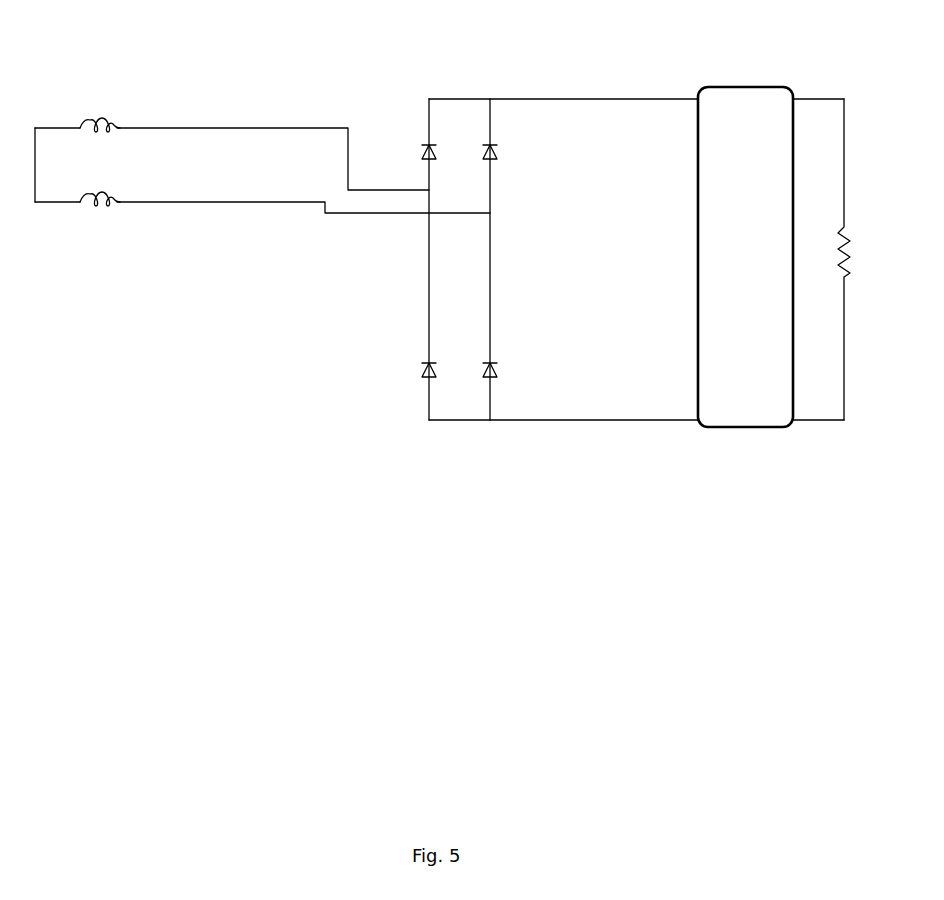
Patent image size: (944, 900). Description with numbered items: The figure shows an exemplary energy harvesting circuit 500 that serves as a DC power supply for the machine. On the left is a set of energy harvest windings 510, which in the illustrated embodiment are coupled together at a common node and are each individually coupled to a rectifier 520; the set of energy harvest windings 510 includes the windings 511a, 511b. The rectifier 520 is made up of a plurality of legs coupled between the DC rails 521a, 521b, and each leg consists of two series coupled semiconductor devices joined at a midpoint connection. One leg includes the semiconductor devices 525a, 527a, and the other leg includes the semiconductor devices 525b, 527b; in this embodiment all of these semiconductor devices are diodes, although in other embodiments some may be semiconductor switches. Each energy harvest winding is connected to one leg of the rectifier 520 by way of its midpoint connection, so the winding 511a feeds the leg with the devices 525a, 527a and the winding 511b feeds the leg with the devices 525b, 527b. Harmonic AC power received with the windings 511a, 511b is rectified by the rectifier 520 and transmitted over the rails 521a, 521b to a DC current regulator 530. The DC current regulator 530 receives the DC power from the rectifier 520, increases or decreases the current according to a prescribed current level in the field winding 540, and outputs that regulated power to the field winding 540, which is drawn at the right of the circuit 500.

The energy harvesting circuit 500 is at (450, 456).
The set of energy harvest windings 510 is at (172, 288).
The winding 511a is at (110, 125).
The winding 511b is at (110, 199).
The rectifier 520 is at (498, 62).
The DC rail 521a is at (590, 98).
The DC rail 521b is at (590, 425).
The semiconductor device 525a is at (427, 145).
The semiconductor device 525b is at (487, 145).
The semiconductor device 527a is at (427, 362).
The semiconductor device 527b is at (487, 362).
The DC current regulator 530 is at (745, 87).
The field winding 540 is at (846, 228).